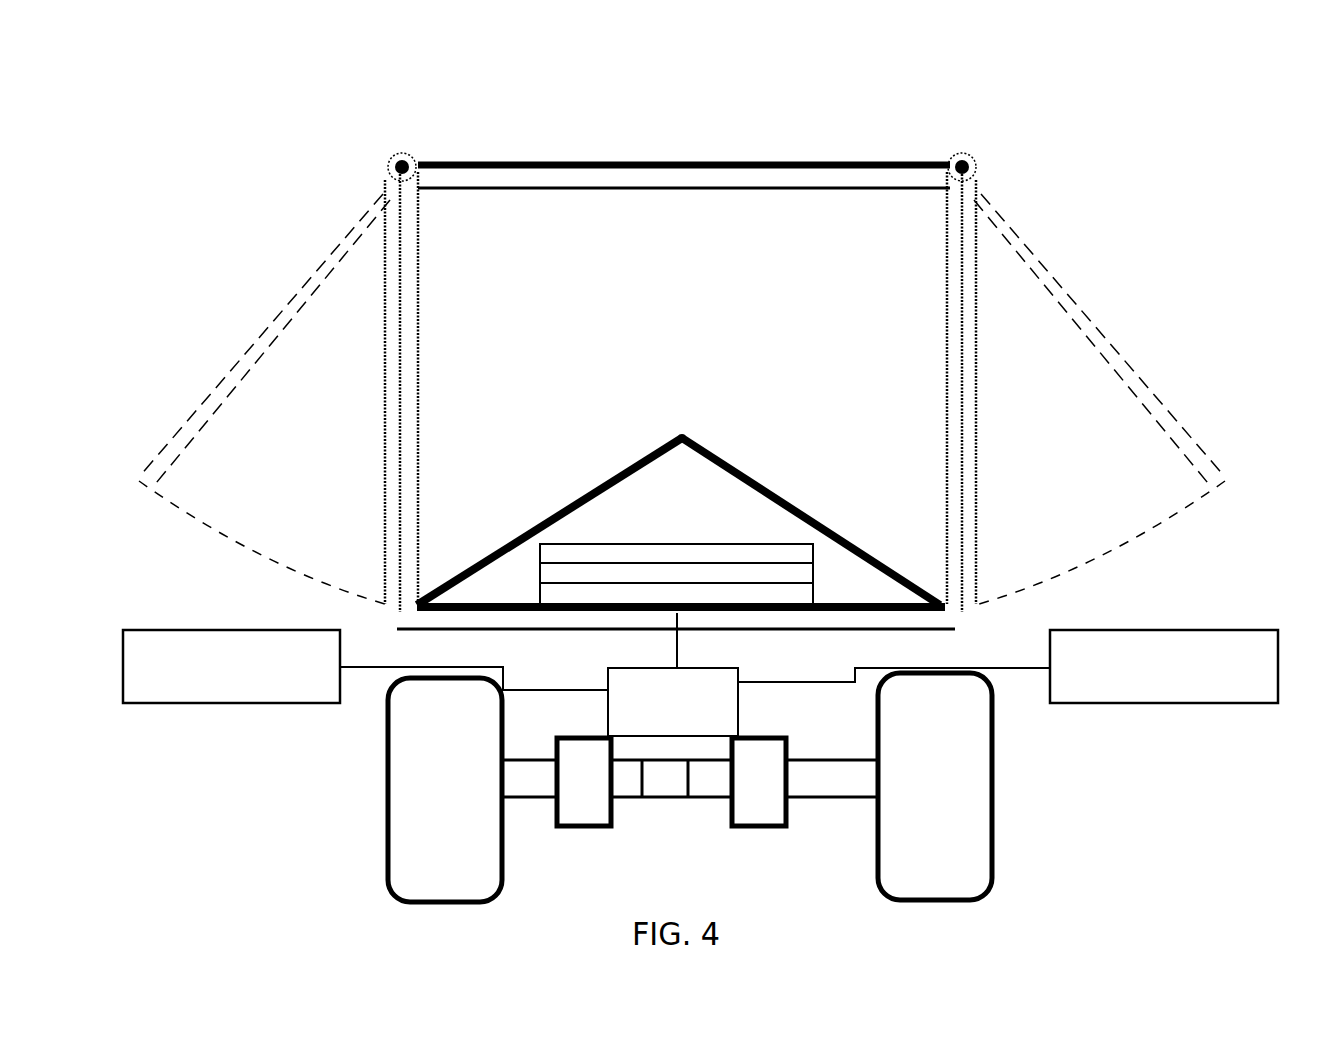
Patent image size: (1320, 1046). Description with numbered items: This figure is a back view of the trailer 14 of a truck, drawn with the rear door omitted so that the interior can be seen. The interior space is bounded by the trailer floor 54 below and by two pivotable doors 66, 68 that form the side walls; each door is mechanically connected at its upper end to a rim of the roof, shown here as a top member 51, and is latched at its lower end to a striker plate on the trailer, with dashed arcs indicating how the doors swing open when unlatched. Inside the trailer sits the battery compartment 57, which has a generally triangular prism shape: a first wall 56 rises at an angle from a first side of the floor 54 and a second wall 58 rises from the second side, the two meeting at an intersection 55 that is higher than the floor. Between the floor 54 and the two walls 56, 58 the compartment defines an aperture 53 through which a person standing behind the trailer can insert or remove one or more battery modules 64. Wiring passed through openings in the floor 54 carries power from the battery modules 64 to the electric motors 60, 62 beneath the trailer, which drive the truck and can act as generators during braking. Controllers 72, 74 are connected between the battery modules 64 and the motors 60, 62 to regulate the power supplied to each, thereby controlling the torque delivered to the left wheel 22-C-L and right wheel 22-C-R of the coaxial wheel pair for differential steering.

The trailer 14 is at (457, 100).
The top rail / crossbar 51 is at (812, 166).
The aperture 53 is at (697, 477).
The trailer floor 54 is at (503, 602).
The intersection 55 is at (684, 436).
The first wall 56 is at (593, 488).
The battery compartment 57 is at (586, 370).
The second wall 58 is at (780, 497).
The electric motor 60 is at (584, 782).
The electric motor 62 is at (759, 782).
The battery modules 64 is at (815, 585).
The pivotable door 66 is at (390, 455).
The pivotable door 68 is at (965, 415).
The controller 72 is at (231, 666).
The controller 74 is at (1164, 666).
The wheel 22-C-L is at (430, 840).
The wheel 22-C-R is at (935, 825).